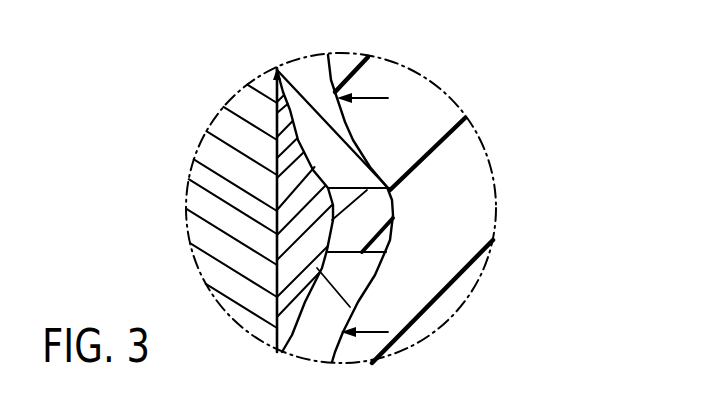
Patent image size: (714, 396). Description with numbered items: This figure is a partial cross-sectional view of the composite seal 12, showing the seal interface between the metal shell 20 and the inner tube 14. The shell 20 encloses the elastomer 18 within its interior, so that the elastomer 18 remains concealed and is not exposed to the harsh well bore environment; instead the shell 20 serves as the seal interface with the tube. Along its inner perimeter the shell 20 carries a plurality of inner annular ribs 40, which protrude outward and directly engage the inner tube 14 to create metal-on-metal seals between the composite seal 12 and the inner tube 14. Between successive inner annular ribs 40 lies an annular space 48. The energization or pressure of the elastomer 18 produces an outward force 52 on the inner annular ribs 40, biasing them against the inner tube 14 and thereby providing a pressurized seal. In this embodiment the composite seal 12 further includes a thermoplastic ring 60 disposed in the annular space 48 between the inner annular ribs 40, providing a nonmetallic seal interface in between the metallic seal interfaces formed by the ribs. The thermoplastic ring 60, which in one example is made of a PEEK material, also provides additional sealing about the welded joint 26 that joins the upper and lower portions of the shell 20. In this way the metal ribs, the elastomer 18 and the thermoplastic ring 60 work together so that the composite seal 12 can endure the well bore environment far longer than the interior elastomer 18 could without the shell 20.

The composite seal 12 is at (506, 332).
The inner tube 14 is at (276, 79).
The elastomer 18 is at (467, 279).
The shell 20 is at (278, 343).
The welded joint 26 is at (396, 220).
The inner annular ribs 40 is at (284, 111).
The annular space 48 is at (300, 213).
The outward force 52 is at (389, 97).
The thermoplastic ring 60 is at (297, 186).